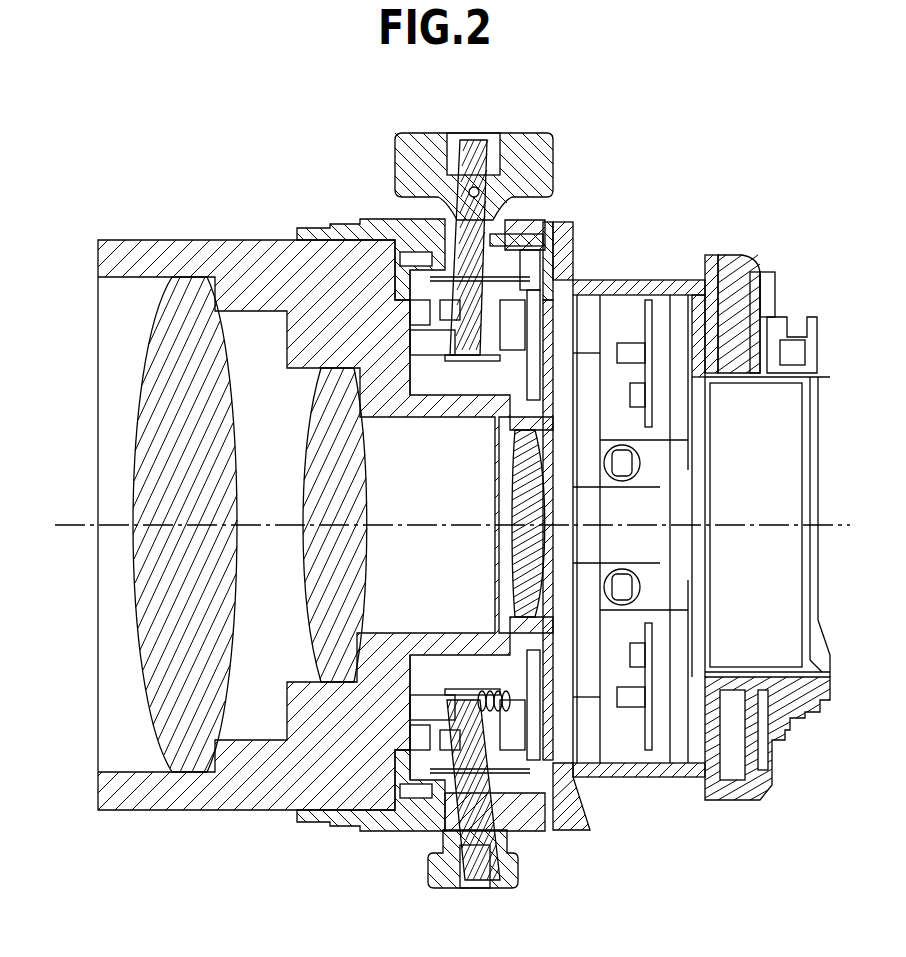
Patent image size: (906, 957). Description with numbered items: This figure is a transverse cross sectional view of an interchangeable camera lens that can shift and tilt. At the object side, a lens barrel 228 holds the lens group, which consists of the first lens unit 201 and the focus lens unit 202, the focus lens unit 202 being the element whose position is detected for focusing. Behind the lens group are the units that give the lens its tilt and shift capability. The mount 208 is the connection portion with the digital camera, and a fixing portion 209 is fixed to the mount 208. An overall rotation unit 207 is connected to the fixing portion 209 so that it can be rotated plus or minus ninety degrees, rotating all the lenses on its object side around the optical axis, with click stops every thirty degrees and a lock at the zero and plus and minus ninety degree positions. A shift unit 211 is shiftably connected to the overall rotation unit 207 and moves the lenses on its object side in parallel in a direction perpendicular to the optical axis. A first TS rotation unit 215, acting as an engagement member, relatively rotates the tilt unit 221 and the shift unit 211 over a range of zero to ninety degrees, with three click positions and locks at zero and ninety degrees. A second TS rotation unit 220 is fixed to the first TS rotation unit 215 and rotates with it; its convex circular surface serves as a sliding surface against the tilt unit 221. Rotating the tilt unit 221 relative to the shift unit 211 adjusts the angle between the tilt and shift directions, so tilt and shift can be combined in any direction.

The first lens unit 201 is at (150, 352).
The focus lens unit 202 is at (520, 588).
The overall rotation unit 207 is at (709, 255).
The mount 208 is at (777, 320).
The fixing portion 209 is at (742, 255).
The shift unit 211 is at (607, 280).
The first TS rotation unit 215 is at (553, 222).
The second TS rotation unit 220 is at (413, 210).
The tilt unit 221 is at (340, 228).
The lens barrel 228 is at (163, 240).